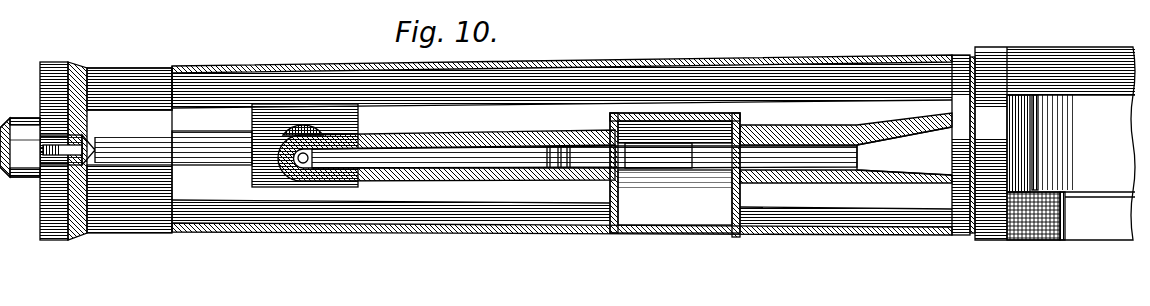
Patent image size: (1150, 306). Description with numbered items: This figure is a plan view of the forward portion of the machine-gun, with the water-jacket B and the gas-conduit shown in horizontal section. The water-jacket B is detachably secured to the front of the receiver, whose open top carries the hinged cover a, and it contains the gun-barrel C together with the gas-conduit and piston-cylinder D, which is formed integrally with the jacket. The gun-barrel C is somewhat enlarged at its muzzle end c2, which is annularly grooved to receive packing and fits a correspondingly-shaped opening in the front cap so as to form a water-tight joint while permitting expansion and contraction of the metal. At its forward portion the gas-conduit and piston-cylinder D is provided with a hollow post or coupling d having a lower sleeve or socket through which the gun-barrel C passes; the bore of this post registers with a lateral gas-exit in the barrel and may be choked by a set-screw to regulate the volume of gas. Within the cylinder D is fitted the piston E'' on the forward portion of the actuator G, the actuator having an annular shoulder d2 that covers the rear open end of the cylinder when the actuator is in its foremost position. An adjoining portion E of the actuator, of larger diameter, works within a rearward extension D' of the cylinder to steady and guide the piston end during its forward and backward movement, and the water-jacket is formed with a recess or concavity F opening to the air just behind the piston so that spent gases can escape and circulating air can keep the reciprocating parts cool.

The water-jacket B is at (800, 58).
The cover a is at (1055, 143).
The muzzle end c2 is at (25, 177).
The gun-barrel C is at (220, 165).
The hollow post or coupling d is at (273, 140).
The gas-conduit and piston-cylinder D is at (446, 143).
The inner rod E'' is at (584, 174).
The annular shoulder d2 is at (627, 168).
The recess or concavity F is at (675, 199).
The adjoining portion of the actuator E is at (846, 127).
The rearward extension of the cylinder D' is at (846, 191).
The actuator G is at (904, 151).